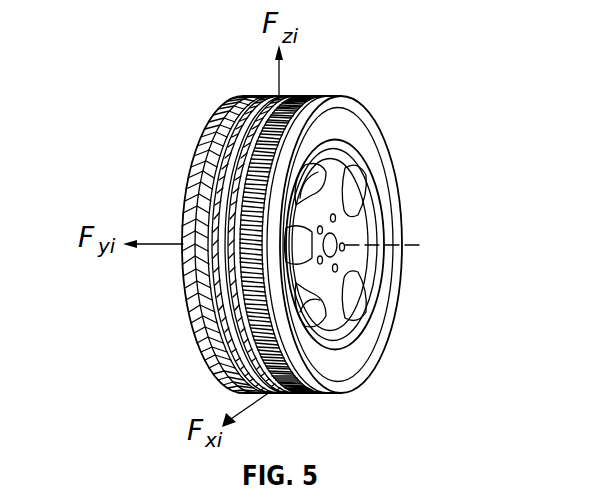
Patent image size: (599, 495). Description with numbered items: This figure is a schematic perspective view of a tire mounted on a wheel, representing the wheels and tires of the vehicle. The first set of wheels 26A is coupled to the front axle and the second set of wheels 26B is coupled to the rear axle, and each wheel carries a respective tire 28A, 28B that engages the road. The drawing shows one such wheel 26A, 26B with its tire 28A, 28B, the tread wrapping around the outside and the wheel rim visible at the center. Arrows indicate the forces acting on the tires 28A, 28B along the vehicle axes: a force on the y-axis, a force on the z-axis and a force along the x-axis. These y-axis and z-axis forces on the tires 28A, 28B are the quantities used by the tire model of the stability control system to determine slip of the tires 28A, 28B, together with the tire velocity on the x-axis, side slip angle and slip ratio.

The first set of wheels 26A is at (222, 200).
The second set of wheels 26B is at (180, 31).
The tire 28A is at (369, 211).
The tire 28B is at (328, 102).